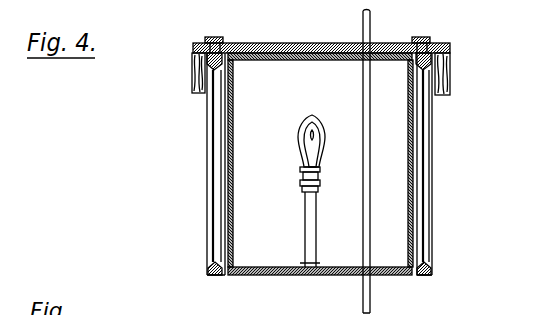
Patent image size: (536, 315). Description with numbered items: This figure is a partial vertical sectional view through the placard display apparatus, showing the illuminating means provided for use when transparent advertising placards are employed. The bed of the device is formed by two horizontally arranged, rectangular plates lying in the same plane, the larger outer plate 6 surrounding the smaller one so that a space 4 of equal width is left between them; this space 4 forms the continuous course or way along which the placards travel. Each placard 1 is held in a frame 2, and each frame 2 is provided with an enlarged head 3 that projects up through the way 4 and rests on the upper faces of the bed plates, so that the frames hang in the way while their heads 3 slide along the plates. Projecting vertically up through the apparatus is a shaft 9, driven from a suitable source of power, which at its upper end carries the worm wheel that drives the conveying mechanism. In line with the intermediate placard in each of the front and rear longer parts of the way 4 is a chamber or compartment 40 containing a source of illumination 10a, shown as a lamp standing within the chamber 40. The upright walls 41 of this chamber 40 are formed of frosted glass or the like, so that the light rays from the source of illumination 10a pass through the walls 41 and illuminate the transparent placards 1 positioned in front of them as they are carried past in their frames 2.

The placard 1 is at (213, 149).
The frame 2 is at (208, 270).
The enlarged head 3 is at (222, 38).
The space 4 is at (448, 46).
The plate 6 is at (193, 52).
The shaft 9 is at (366, 213).
The lamp 10a is at (305, 198).
The chamber 40 is at (390, 275).
The upright walls 41 is at (233, 113).